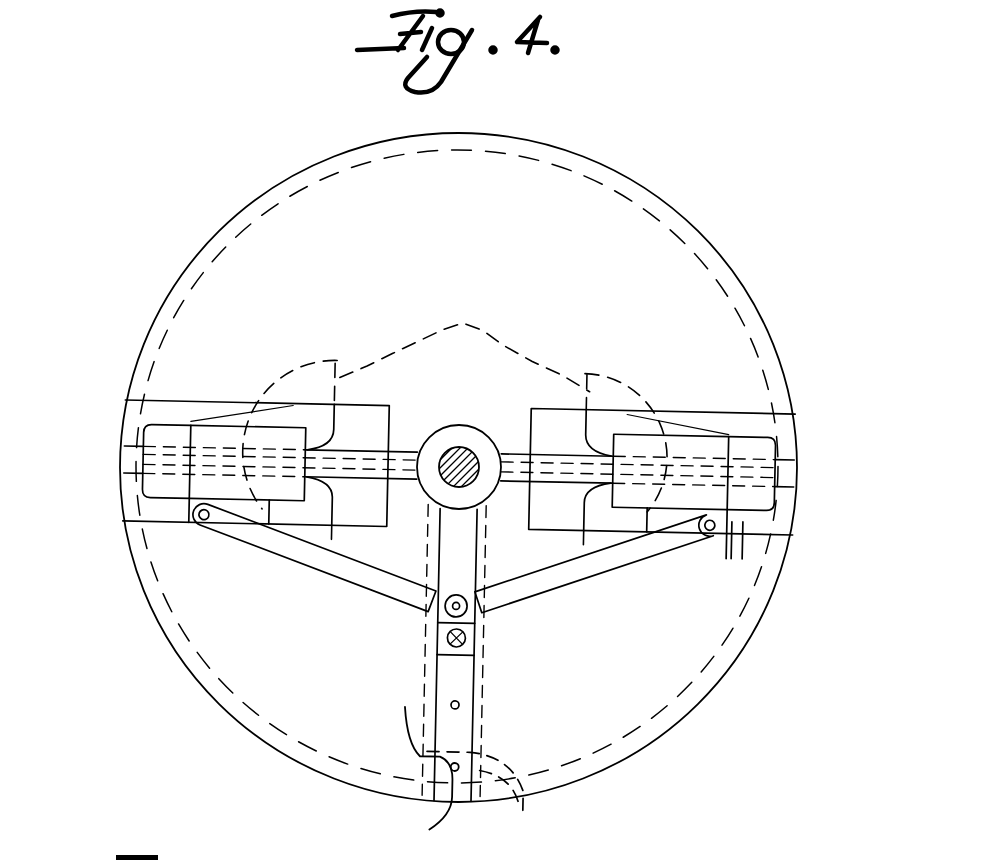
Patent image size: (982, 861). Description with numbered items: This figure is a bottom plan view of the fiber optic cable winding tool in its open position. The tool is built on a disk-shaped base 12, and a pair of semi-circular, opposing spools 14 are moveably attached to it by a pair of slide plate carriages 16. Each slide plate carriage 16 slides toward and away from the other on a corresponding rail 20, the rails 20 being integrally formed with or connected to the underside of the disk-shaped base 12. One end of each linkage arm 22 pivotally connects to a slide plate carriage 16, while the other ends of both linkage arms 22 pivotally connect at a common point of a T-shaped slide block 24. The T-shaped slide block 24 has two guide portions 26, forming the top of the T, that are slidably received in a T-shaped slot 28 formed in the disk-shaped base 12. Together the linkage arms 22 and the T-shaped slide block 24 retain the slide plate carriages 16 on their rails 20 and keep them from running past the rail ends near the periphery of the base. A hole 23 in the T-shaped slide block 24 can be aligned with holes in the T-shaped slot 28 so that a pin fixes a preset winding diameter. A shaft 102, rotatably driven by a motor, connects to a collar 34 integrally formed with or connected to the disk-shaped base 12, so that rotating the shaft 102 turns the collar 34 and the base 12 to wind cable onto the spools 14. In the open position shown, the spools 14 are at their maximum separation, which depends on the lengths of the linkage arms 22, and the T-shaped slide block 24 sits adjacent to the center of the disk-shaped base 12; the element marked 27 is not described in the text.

The disk-shaped base 12 is at (682, 295).
The spool 14 is at (426, 342).
The slide plate carriage 16 is at (207, 437).
The rail 20 is at (160, 460).
The linkage arm 22 is at (410, 598).
The hole 23 is at (467, 638).
The T-shaped slide block 24 is at (458, 655).
The guide portion 26 is at (521, 792).
The pin 27 is at (453, 705).
The T-shaped slot 28 is at (438, 820).
The collar 34 is at (466, 440).
The shaft 102 is at (458, 464).